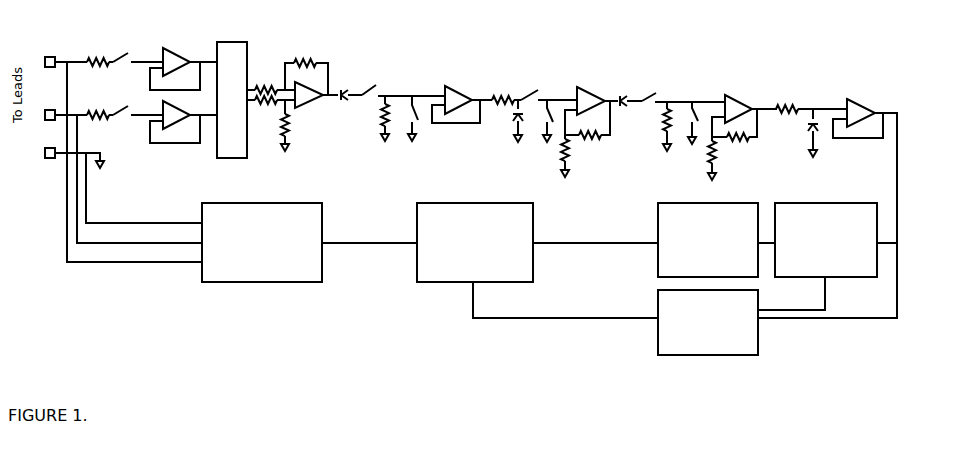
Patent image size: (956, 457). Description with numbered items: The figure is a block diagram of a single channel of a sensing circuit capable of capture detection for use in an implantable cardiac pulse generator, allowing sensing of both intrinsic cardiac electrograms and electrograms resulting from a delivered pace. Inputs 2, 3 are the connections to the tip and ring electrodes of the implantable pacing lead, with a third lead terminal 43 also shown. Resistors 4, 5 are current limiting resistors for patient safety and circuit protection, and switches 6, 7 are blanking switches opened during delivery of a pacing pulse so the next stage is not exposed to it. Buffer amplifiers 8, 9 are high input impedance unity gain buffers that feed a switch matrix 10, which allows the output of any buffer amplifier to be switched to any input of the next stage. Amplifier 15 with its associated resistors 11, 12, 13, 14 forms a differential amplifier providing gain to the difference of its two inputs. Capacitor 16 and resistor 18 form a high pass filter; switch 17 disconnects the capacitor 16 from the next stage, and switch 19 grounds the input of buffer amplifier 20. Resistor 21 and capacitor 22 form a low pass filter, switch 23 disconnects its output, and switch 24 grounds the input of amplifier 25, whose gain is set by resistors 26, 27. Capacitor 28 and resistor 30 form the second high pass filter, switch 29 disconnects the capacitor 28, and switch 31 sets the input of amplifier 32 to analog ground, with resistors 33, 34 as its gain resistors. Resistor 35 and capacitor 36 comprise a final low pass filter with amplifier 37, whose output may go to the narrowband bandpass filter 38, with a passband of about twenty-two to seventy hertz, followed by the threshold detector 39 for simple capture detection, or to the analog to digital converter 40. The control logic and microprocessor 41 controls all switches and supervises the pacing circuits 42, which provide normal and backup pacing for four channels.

The input 2 is at (123, 149).
The input 3 is at (123, 167).
The resistor 4 is at (100, 51).
The resistor 5 is at (100, 102).
The switch 6 is at (138, 49).
The switch 7 is at (138, 100).
The buffer amplifier 8 is at (183, 59).
The buffer amplifier 9 is at (183, 131).
The switch matrix 10 is at (232, 91).
The resistor 11 is at (271, 80).
The resistor 12 is at (306, 70).
The resistor 13 is at (271, 110).
The resistor 14 is at (276, 125).
The amplifier 15 is at (316, 103).
The capacitor 16 is at (351, 87).
The switch 17 is at (403, 81).
The resistor 18 is at (376, 118).
The switch 19 is at (406, 118).
The buffer amplifier 20 is at (462, 94).
The resistor 21 is at (505, 89).
The capacitor 22 is at (509, 121).
The switch 23 is at (549, 87).
The switch 24 is at (541, 121).
The amplifier 25 is at (597, 94).
The resistor 26 is at (587, 126).
The resistor 27 is at (555, 156).
The capacitor 28 is at (628, 95).
The switch 29 is at (683, 88).
The resistor 30 is at (658, 126).
The switch 31 is at (686, 123).
The amplifier 32 is at (751, 102).
The resistor 33 is at (734, 131).
The resistor 34 is at (725, 158).
The resistor 35 is at (811, 98).
The capacitor 36 is at (805, 133).
The amplifier 37 is at (827, 201).
The narrowband bandpass filter 38 is at (817, 249).
The threshold detector 39 is at (716, 232).
The analog to digital converter 40 is at (708, 332).
The control logic and microprocessor 41 is at (537, 254).
The pacing circuits 42 is at (309, 235).
The lead terminal 43 is at (122, 185).